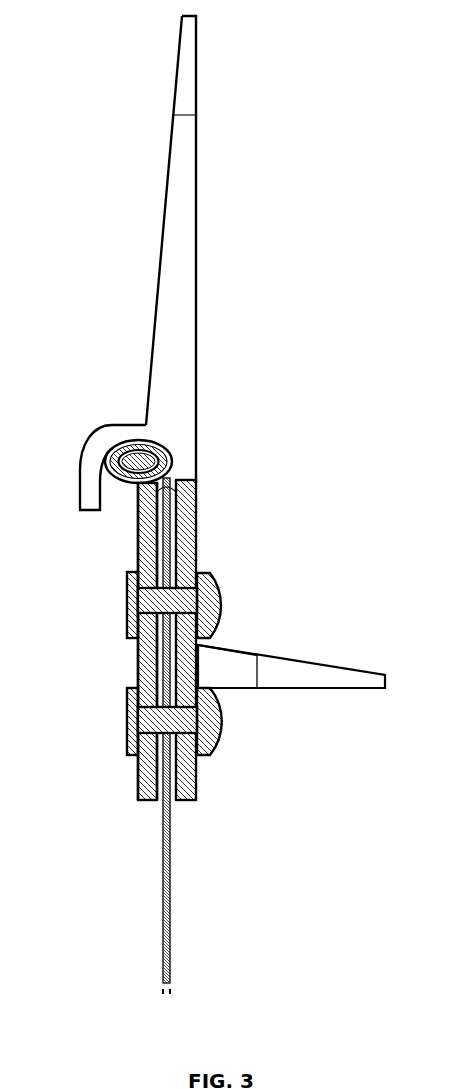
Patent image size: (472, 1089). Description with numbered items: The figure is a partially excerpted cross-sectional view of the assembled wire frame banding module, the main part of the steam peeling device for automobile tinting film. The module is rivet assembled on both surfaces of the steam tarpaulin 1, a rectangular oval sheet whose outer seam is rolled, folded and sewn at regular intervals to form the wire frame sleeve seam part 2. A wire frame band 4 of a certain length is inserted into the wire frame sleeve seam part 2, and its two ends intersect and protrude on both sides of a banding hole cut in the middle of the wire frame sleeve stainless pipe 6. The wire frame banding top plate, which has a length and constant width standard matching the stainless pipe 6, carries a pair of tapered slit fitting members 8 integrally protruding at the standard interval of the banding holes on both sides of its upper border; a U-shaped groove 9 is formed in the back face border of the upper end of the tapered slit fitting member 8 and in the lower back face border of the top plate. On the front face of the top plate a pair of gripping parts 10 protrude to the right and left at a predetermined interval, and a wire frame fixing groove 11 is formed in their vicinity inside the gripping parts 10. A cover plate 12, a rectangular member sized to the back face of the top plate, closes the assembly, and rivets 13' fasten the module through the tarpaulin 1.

The steam tarpaulin 1 is at (163, 872).
The wire frame sleeve seam part 2 is at (165, 478).
The wire frame band 4 is at (139, 462).
The wire frame sleeve stainless pipe 6 is at (167, 463).
The tapered slit fitting member 8 is at (182, 208).
The U-shaped groove 9 is at (112, 495).
The gripping part 10 is at (278, 667).
The wire frame fixing groove 11 is at (232, 678).
The cover plate 12 is at (187, 546).
The rivet 13' is at (244, 605).